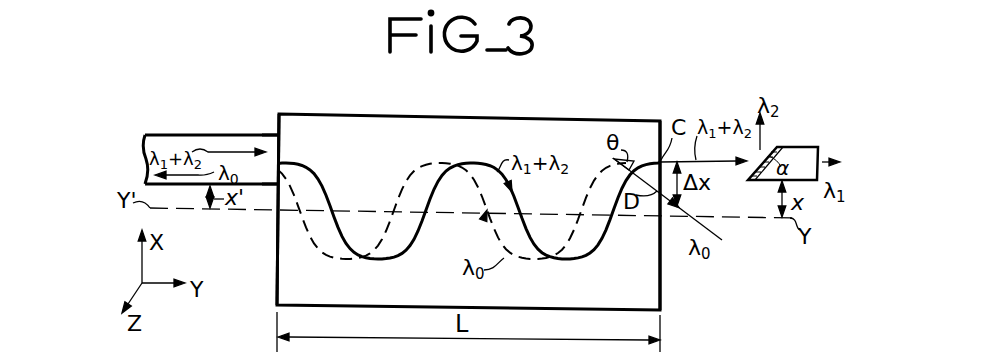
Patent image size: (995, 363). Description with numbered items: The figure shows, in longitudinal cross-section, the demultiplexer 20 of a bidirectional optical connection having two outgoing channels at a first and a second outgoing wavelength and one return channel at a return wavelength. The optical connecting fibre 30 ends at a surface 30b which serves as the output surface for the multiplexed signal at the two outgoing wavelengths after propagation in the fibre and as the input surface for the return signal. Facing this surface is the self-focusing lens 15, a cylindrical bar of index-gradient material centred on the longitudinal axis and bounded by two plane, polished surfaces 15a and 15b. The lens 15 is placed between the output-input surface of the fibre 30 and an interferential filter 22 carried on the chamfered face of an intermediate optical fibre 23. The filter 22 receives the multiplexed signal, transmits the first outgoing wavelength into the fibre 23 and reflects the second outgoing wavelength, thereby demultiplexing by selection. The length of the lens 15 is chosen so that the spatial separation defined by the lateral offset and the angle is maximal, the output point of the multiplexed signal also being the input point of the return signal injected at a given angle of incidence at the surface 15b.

The self-focusing lens 15 is at (621, 112).
The plane polished surface 15a is at (278, 277).
The plane polished surface 15b is at (660, 283).
The optical connecting fibre 30 is at (188, 135).
The output-input surface 30b is at (273, 139).
The intermediate optical fibre 23 is at (782, 147).
The interferential filter 22 is at (748, 180).
The demultiplexer 20 is at (750, 279).